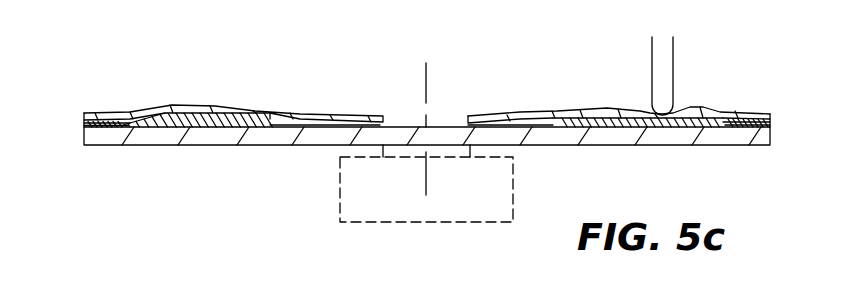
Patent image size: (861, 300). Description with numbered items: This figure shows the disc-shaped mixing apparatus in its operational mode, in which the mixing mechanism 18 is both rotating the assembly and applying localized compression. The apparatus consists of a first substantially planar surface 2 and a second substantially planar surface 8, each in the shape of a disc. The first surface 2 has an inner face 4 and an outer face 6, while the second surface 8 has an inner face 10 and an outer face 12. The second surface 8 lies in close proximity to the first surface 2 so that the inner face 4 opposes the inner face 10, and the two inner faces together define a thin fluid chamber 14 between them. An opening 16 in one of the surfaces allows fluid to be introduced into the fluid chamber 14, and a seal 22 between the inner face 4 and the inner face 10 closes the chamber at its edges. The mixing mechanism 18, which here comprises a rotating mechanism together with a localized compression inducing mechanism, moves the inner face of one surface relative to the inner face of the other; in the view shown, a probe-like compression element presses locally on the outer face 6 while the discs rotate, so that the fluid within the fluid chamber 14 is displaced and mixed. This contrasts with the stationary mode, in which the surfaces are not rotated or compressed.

The first surface 2 is at (753, 112).
The inner face of the first surface 4 is at (714, 146).
The outer face of the first surface 6 is at (703, 108).
The second surface 8 is at (146, 146).
The inner face of the second surface 10 is at (167, 134).
The outer face of the second surface 12 is at (285, 150).
The fluid chamber 14 is at (222, 128).
The opening 16 is at (398, 104).
The mixing mechanism 18 is at (650, 80).
The seal 22 is at (103, 128).